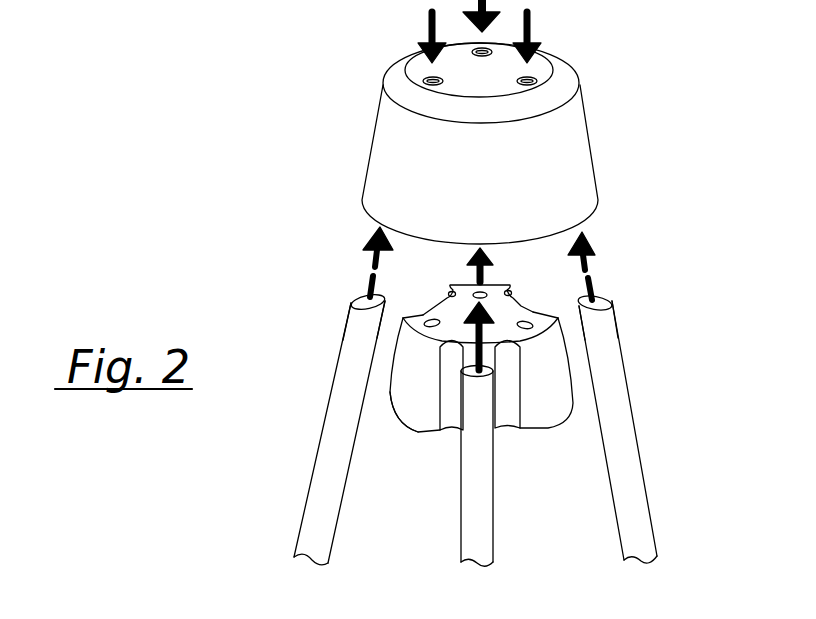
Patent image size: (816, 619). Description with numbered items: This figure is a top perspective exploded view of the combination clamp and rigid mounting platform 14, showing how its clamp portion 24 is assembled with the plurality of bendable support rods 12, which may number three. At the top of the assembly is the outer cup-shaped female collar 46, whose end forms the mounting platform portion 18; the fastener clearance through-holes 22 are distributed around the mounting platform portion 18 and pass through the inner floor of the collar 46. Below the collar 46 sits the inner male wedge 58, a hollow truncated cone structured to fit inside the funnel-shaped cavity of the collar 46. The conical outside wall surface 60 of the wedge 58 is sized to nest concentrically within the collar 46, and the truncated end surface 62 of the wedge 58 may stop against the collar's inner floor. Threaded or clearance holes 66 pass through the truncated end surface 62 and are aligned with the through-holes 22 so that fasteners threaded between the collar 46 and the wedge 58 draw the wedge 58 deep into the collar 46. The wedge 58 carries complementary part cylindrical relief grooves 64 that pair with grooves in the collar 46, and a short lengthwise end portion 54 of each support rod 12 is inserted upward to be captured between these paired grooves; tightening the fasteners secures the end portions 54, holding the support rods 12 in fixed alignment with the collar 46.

The bendable support rods 12 is at (300, 538).
The combination clamp and rigid mounting platform 14 is at (667, 83).
The mounting platform portion 18 is at (484, 89).
The fastener clearance through-holes 22 is at (428, 80).
The clamp portion 24 is at (304, 234).
The outer cup-shaped female collar 46 is at (597, 172).
The lengthwise end portion 54 is at (347, 340).
The inner male wedge 58 is at (547, 425).
The conical outside wall surface 60 is at (403, 407).
The truncated end surface 62 is at (495, 310).
The complementary part cylindrical relief grooves 64 is at (440, 303).
The threaded or clearance holes 66 is at (432, 324).